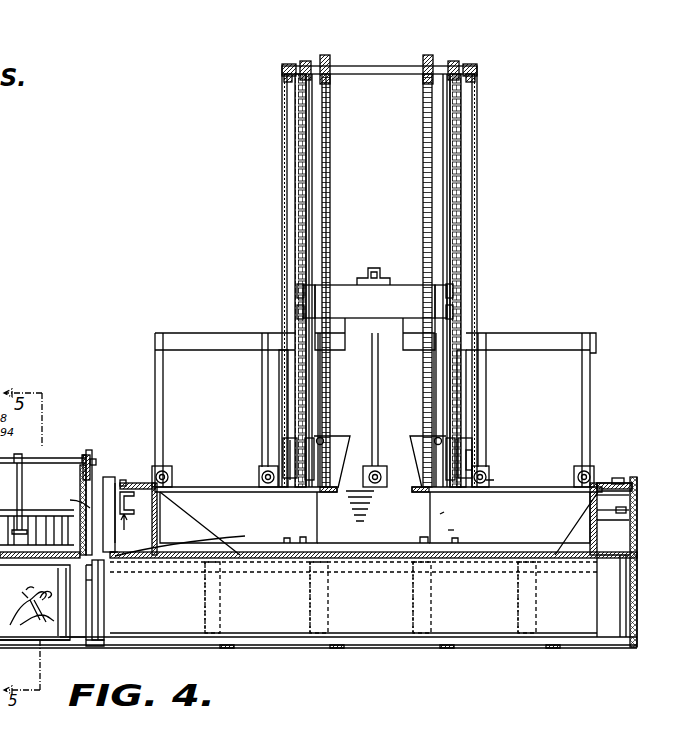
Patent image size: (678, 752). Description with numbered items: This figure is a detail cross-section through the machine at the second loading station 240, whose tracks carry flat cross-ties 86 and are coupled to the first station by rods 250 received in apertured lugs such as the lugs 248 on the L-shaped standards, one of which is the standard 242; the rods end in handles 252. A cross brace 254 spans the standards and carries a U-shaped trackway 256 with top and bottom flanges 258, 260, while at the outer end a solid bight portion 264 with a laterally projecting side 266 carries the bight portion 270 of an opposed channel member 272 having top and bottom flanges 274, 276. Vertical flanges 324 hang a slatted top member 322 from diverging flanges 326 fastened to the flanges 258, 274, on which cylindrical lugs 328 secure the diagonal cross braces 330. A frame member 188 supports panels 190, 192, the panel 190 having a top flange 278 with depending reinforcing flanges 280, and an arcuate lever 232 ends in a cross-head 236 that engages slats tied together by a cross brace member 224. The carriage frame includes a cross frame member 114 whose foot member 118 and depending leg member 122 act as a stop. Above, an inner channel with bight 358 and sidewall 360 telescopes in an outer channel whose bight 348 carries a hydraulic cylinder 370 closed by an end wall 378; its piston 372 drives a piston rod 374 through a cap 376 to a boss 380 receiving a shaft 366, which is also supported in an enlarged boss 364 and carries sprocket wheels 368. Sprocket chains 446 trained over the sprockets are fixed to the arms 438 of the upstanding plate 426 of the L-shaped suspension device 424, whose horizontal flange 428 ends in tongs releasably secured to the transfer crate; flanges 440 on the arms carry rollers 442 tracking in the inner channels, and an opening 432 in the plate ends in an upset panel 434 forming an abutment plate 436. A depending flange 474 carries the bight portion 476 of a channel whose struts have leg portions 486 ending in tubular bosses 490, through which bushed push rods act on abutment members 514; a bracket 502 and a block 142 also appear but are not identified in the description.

The shaft 366 is at (360, 67).
The enlarged boss 364 is at (306, 61).
The boss 380 is at (286, 65).
The sprocket wheels 368 is at (330, 79).
The cap 376 is at (284, 79).
The hydraulic cylinder 370 is at (282, 256).
The piston rod 374 is at (295, 226).
The bight 348 is at (322, 215).
The bight 358 is at (312, 210).
The sidewall 360 is at (312, 198).
The sprocket chains 446 is at (400, 139).
The flange 474 is at (398, 293).
The bracket 502 is at (366, 267).
The hollow tubular bosses 490 is at (356, 348).
The bight portion 476 is at (544, 332).
The leg portion 486 is at (162, 408).
The rollers 442 is at (326, 434).
The arms 438 is at (330, 432).
The laterally-projecting flanges 440 is at (328, 444).
The opening 432 is at (334, 464).
The abutment plate 436 is at (382, 470).
The upset panel 434 is at (352, 506).
The abutment members 514 is at (170, 468).
The piston 372 is at (279, 444).
The panel 192 is at (282, 458).
The block 142 is at (466, 458).
The panel 190 is at (488, 476).
The cross braces 330 is at (248, 492).
The end wall 378 is at (288, 492).
The L-shaped suspension device 424 is at (446, 513).
The upstanding plate 426 is at (462, 528).
The flange 428 is at (402, 546).
The slatted top member 322 is at (254, 542).
The flanges 326 is at (160, 497).
The flanges 324 is at (160, 512).
The lugs 248 is at (176, 530).
The lugs 328 is at (128, 480).
The L-shaped standard 242 is at (110, 477).
The cross brace 254 is at (120, 479).
The top flange 258 is at (136, 502).
The bottom flange 260 is at (135, 524).
The trackway 256 is at (125, 543).
The frame member 188 is at (96, 457).
The cross brace member 224 is at (44, 460).
The handles 252 is at (78, 490).
The arcuate lever 232 is at (20, 494).
The cross-head 236 is at (28, 545).
The top flange 278 is at (112, 574).
The reinforcing flanges 280 is at (104, 583).
The rods 250 is at (100, 610).
The top flange 274 is at (636, 478).
The bight portion 270 is at (600, 498).
The bottom flange 276 is at (596, 512).
The U-shaped channel member 272 is at (618, 514).
The bight portion 264 is at (628, 535).
The side 266 is at (620, 578).
The second loading station 240 is at (369, 652).
The cross-ties 86 is at (220, 650).
The foot member 118 is at (60, 644).
The cross frame member 114 is at (72, 642).
The leg member 122 is at (84, 646).